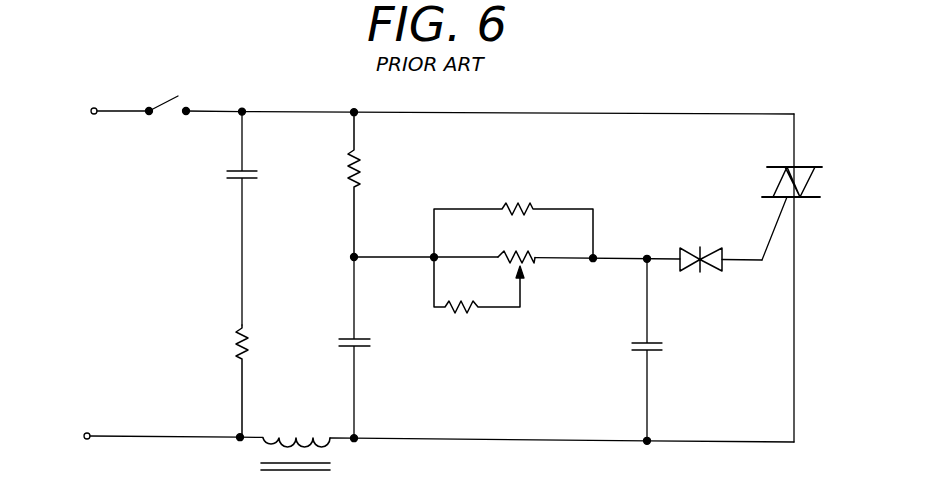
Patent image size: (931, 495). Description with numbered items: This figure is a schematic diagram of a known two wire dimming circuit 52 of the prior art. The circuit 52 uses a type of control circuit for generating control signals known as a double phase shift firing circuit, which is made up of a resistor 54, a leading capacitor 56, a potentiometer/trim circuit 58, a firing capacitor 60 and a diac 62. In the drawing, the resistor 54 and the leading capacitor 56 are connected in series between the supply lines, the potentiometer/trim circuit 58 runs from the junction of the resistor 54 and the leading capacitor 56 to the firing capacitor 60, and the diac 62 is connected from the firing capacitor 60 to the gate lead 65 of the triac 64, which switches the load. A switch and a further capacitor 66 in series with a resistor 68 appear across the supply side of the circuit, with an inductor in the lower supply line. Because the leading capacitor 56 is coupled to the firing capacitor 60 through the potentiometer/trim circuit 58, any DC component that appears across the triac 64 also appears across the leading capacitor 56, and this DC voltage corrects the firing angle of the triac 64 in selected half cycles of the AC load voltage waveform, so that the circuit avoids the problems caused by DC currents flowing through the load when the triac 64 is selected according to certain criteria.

The two wire dimming circuit 52 is at (612, 103).
The resistor 54 is at (360, 173).
The leading capacitor 56 is at (366, 350).
The potentiometer/trim circuit 58 is at (557, 209).
The firing capacitor 60 is at (655, 352).
The diac 62 is at (718, 222).
The triac 64 is at (775, 166).
The gate lead 65 is at (762, 261).
The capacitor 66 is at (228, 179).
The resistor 68 is at (240, 350).